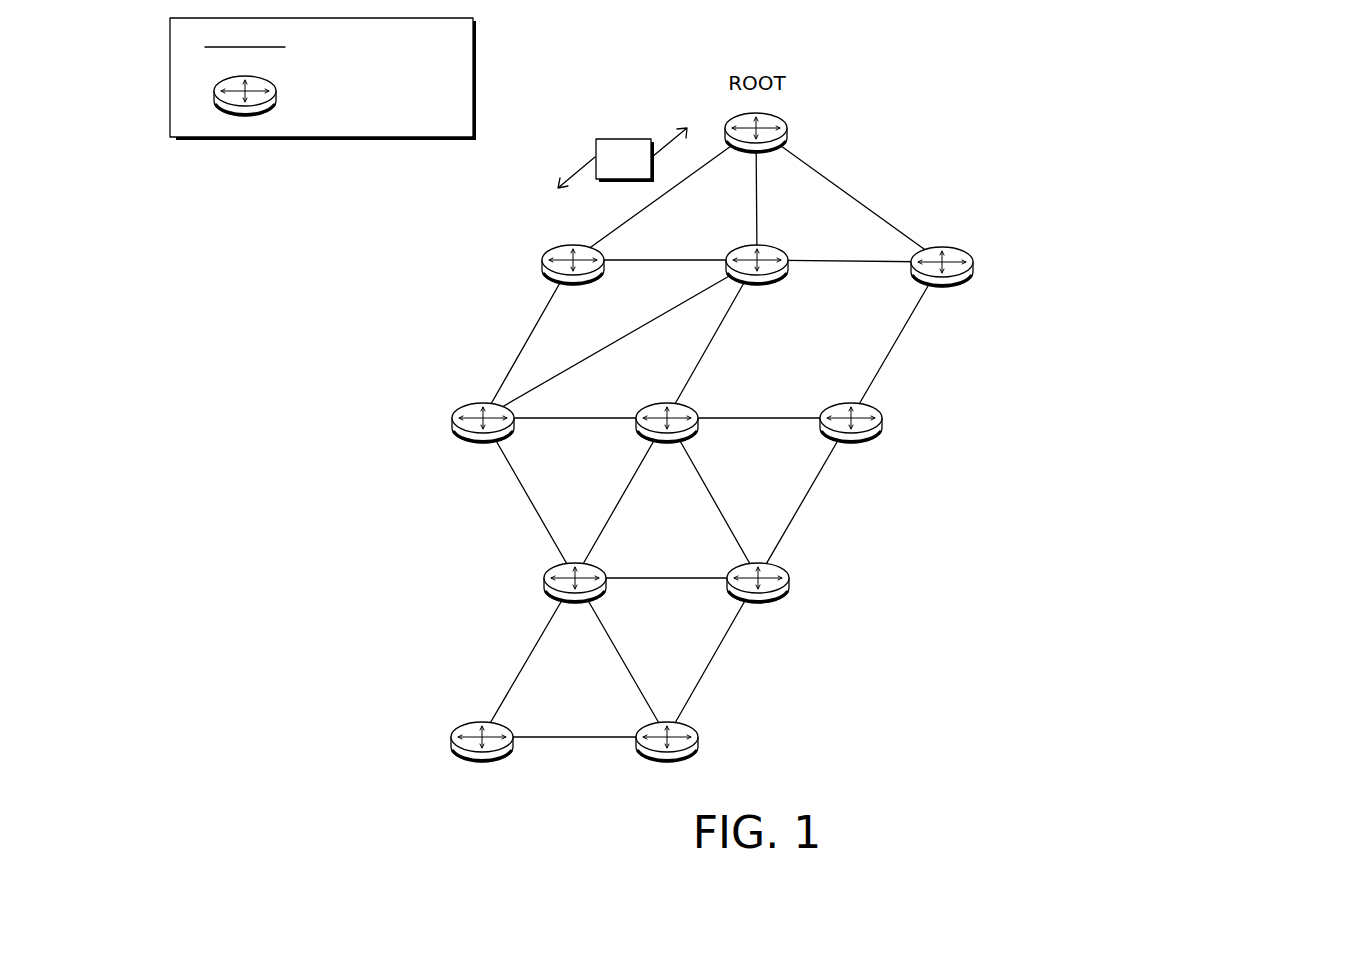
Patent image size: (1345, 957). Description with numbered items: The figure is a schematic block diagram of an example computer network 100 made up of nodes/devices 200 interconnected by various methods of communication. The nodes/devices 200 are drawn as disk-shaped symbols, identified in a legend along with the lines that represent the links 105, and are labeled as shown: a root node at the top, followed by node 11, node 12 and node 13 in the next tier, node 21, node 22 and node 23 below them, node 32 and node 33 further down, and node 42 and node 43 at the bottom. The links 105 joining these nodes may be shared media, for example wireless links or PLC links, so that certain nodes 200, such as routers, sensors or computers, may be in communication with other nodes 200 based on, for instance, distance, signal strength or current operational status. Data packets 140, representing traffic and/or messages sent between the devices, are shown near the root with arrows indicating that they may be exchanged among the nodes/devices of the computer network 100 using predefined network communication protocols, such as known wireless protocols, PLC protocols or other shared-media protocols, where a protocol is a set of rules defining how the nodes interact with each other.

The computer network 100 is at (1253, 73).
The links 105 is at (556, 377).
The nodes/devices 200 is at (321, 96).
The data packets 140 is at (609, 169).
The node 11 is at (573, 283).
The node 12 is at (757, 283).
The node 13 is at (942, 285).
The node 21 is at (483, 441).
The node 22 is at (667, 441).
The node 23 is at (851, 441).
The node 32 is at (575, 601).
The node 33 is at (758, 601).
The node 42 is at (482, 760).
The node 43 is at (667, 760).